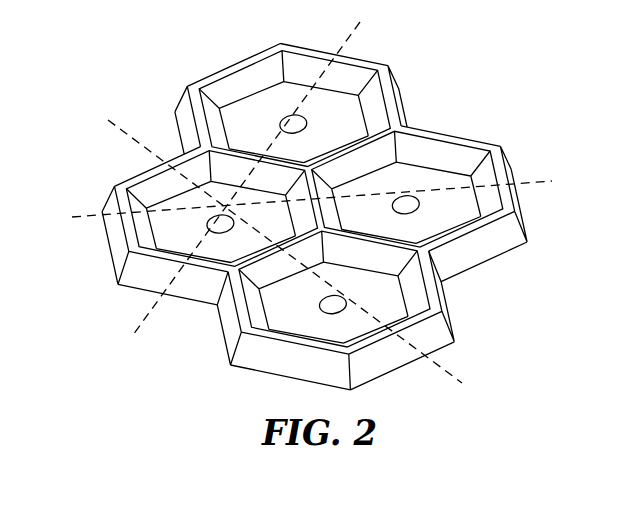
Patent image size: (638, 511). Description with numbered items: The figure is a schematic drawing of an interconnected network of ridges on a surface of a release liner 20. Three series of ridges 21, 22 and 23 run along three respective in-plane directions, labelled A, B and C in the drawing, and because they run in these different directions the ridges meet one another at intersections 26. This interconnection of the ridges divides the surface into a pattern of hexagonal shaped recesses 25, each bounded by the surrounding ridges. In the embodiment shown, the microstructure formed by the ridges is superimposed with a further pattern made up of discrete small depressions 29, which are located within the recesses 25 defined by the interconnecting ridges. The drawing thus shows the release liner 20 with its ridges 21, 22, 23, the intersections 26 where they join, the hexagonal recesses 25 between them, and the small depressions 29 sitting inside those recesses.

The release liner 20 is at (478, 60).
The ridge 21 is at (128, 233).
The ridge 22 is at (374, 60).
The ridge 23 is at (420, 325).
The hexagonal shaped recess 25 is at (422, 178).
The intersection 26 is at (401, 126).
The small depression 29 is at (419, 206).